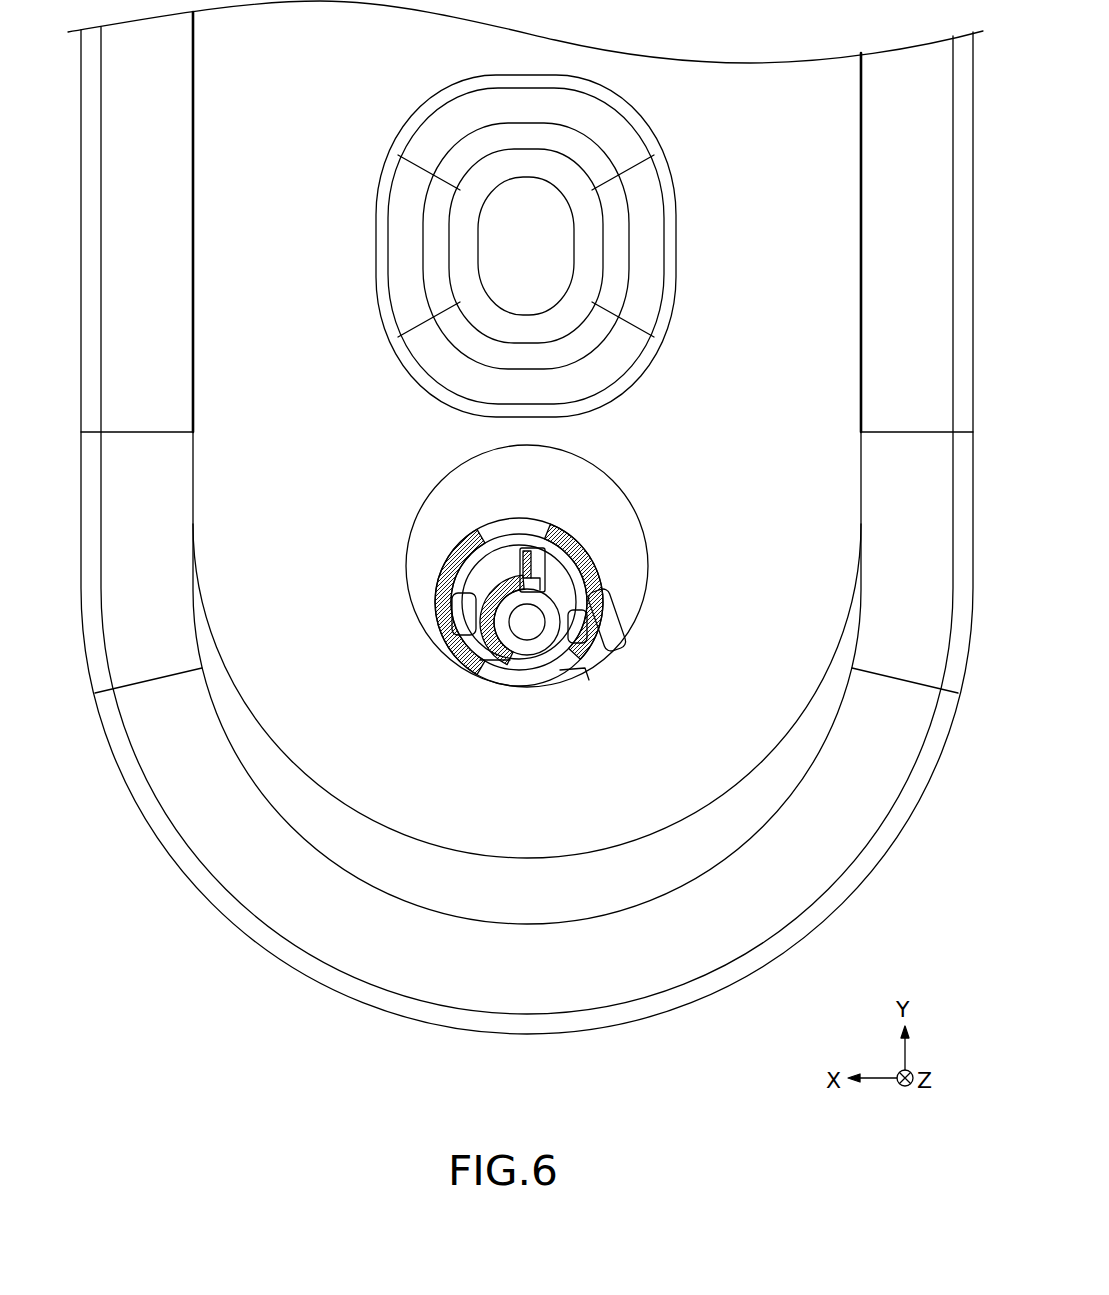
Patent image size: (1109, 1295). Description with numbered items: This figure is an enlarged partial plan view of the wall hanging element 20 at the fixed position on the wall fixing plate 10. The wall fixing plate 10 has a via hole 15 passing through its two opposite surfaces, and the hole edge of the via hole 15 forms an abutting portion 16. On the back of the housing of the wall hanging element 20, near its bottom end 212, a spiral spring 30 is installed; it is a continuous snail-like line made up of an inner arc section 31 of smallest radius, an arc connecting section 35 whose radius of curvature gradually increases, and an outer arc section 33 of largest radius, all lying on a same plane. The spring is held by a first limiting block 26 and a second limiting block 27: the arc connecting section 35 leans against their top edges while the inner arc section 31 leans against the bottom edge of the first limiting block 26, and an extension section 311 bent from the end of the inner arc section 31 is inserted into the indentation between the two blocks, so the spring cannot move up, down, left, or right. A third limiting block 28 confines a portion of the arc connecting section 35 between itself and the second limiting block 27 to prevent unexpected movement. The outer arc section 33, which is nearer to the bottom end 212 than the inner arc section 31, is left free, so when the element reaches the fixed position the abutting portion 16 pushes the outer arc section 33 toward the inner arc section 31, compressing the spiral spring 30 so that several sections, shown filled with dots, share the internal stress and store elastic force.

The wall fixing plate 10 is at (632, 813).
The via hole 15 is at (440, 522).
The abutting portion 16 is at (527, 687).
The wall hanging element 20 is at (573, 982).
The bottom end 212 is at (473, 1033).
The first limiting block 26 is at (470, 582).
The second limiting block 27 is at (573, 593).
The third limiting block 28 is at (610, 638).
The spiral spring 30 is at (593, 533).
The inner arc section 31 is at (438, 608).
The extension section 311 is at (570, 540).
The outer arc section 33 is at (492, 678).
The arc connecting section 35 is at (593, 662).